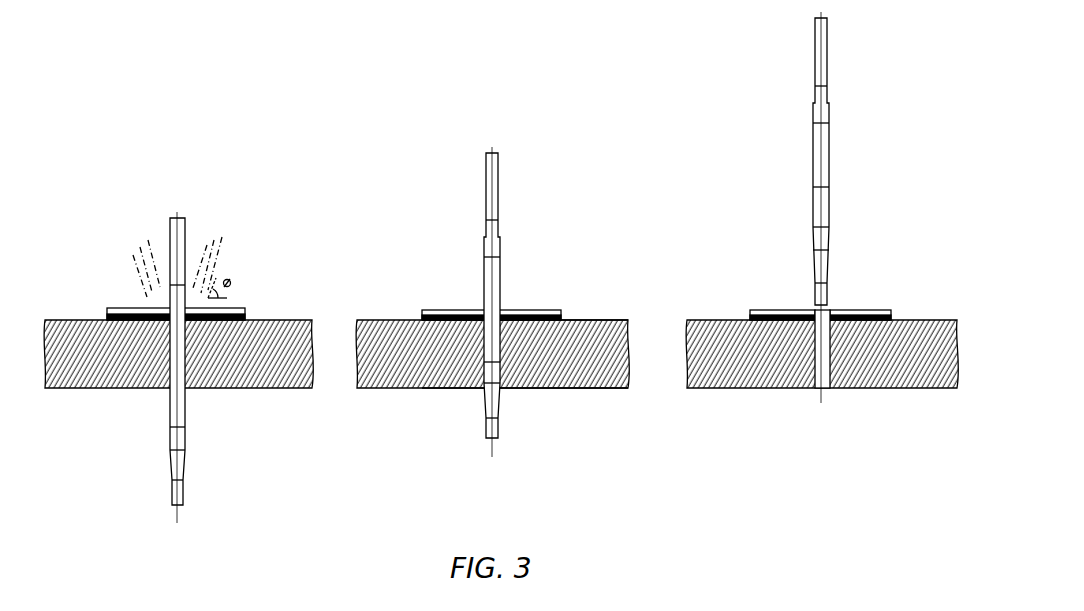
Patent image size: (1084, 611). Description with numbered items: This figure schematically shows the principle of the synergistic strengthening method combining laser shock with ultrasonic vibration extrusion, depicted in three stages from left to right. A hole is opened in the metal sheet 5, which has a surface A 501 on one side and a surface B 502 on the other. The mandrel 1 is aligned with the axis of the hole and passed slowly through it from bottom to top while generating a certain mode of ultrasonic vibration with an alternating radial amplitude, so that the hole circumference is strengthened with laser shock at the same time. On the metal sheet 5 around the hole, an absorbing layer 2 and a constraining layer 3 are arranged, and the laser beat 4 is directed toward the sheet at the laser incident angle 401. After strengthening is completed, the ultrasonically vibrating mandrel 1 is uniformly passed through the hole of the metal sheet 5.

The mandrel 1 is at (518, 267).
The absorbing layer 2 is at (476, 290).
The constraining layer 3 is at (499, 295).
The laser beat 4 is at (193, 249).
The laser incident angle 401 is at (243, 264).
The metal sheet 5 is at (501, 353).
The surface A of the metal sheet 501 is at (525, 289).
The surface B of the metal sheet 502 is at (525, 410).